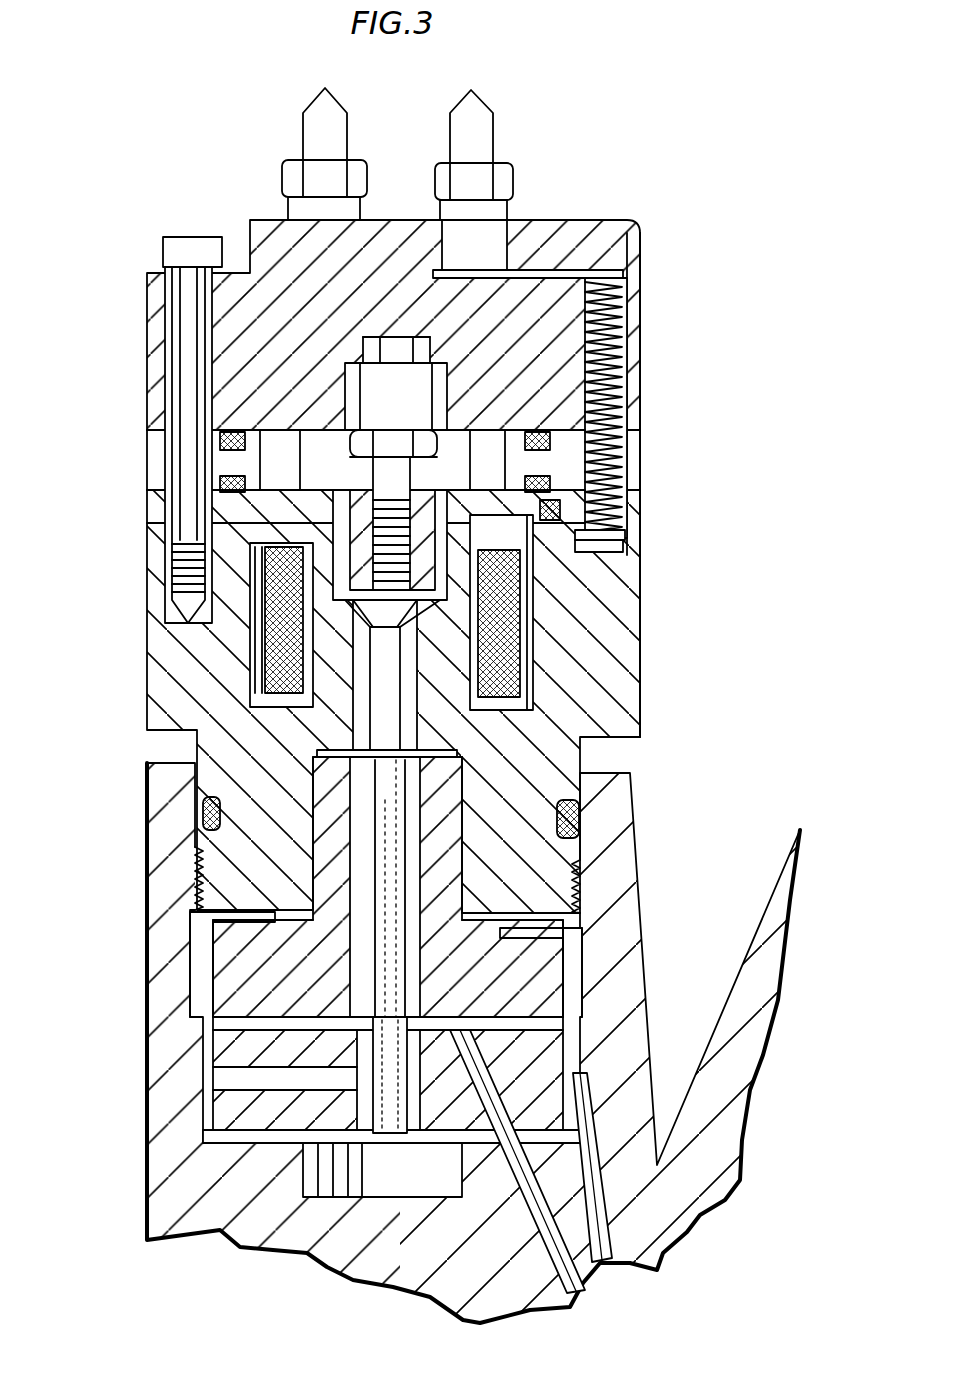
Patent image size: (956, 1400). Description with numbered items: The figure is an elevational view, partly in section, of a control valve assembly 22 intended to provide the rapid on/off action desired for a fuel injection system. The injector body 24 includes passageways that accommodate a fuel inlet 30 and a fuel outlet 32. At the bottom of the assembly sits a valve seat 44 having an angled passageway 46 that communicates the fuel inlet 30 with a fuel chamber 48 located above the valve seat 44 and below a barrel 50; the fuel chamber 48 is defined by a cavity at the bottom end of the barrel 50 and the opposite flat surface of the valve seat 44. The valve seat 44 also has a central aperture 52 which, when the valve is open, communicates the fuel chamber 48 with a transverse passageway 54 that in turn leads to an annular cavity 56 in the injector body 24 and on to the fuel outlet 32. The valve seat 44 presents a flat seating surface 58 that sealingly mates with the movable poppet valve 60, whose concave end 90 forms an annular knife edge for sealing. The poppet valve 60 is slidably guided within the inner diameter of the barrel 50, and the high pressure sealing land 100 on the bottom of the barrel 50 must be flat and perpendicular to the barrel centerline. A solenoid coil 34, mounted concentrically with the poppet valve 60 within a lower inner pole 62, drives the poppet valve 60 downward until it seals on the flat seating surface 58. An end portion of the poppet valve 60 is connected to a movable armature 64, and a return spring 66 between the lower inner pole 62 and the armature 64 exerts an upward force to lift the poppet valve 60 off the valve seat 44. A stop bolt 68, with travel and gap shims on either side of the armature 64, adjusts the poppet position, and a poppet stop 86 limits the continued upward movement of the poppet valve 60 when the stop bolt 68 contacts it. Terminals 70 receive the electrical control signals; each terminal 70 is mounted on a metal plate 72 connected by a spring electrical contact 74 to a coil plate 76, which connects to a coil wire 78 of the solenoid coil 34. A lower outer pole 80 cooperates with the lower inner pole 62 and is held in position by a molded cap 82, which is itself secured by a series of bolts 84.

The control valve assembly 22 is at (660, 140).
The injector body 24 is at (627, 900).
The fuel inlet 30 is at (525, 1318).
The fuel outlet 32 is at (607, 1240).
The solenoid coil 34 is at (535, 620).
The valve seat 44 is at (520, 1018).
The angled passageway 46 is at (483, 1077).
The fuel chamber 48 is at (420, 990).
The barrel 50 is at (550, 940).
The central aperture 52 is at (355, 1190).
The transverse passageway 54 is at (215, 1078).
The annular cavity 56 is at (200, 915).
The flat seating surface 58 is at (357, 972).
The poppet valve 60 is at (415, 795).
The lower inner pole 62 is at (630, 690).
The armature 64 is at (385, 400).
The return spring 66 is at (345, 597).
The stop bolt 68 is at (465, 420).
The terminals 70 is at (455, 120).
The metal plate 72 is at (540, 270).
The spring electrical contact 74 is at (642, 405).
The coil plate 76 is at (622, 522).
The coil wire 78 is at (612, 560).
The lower outer pole 80 is at (150, 495).
The molded cap 82 is at (640, 295).
The bolts 84 is at (180, 237).
The poppet stop 86 is at (352, 360).
The concave end 90 is at (398, 1035).
The high pressure sealing land 100 is at (240, 1025).